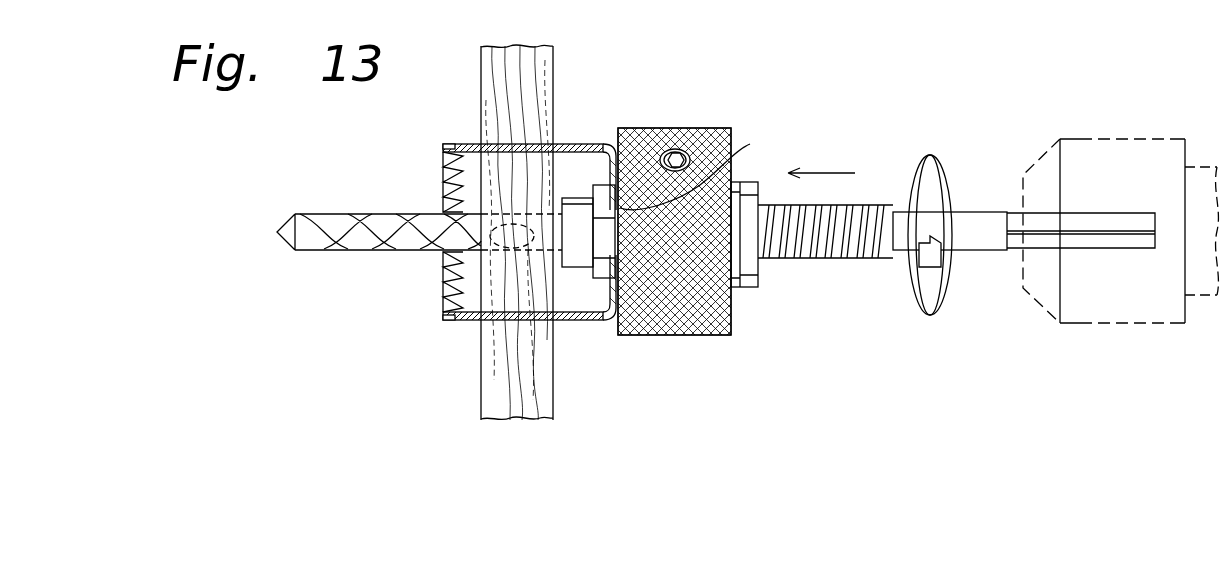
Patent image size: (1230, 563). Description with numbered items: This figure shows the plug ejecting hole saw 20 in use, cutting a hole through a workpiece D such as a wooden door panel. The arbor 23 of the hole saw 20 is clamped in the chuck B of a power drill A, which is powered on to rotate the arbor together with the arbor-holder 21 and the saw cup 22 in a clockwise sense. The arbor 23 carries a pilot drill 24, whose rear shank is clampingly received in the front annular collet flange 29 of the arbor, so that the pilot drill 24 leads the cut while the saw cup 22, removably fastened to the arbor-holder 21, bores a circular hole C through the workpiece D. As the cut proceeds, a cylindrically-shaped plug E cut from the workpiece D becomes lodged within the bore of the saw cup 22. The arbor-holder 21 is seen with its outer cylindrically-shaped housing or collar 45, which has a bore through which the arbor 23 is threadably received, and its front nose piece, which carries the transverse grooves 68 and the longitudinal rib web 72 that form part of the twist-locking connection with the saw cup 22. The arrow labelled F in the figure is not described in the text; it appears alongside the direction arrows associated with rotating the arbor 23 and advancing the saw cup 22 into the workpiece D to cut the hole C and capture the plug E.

The plug ejecting hole saw 20 is at (696, 82).
The arbor-holder 21 is at (641, 120).
The saw cup 22 is at (462, 136).
The arbor 23 is at (980, 268).
The pilot drill 24 is at (312, 213).
The collet flange 29 is at (572, 268).
The collar 45 is at (712, 120).
The transverse grooves 68 is at (614, 290).
The longitudinal rib web 72 is at (598, 142).
The power drill A is at (1203, 167).
The chuck B is at (1152, 139).
The circular hole C is at (481, 318).
The workpiece D is at (481, 72).
The plug E is at (492, 282).
The force direction F is at (694, 171).